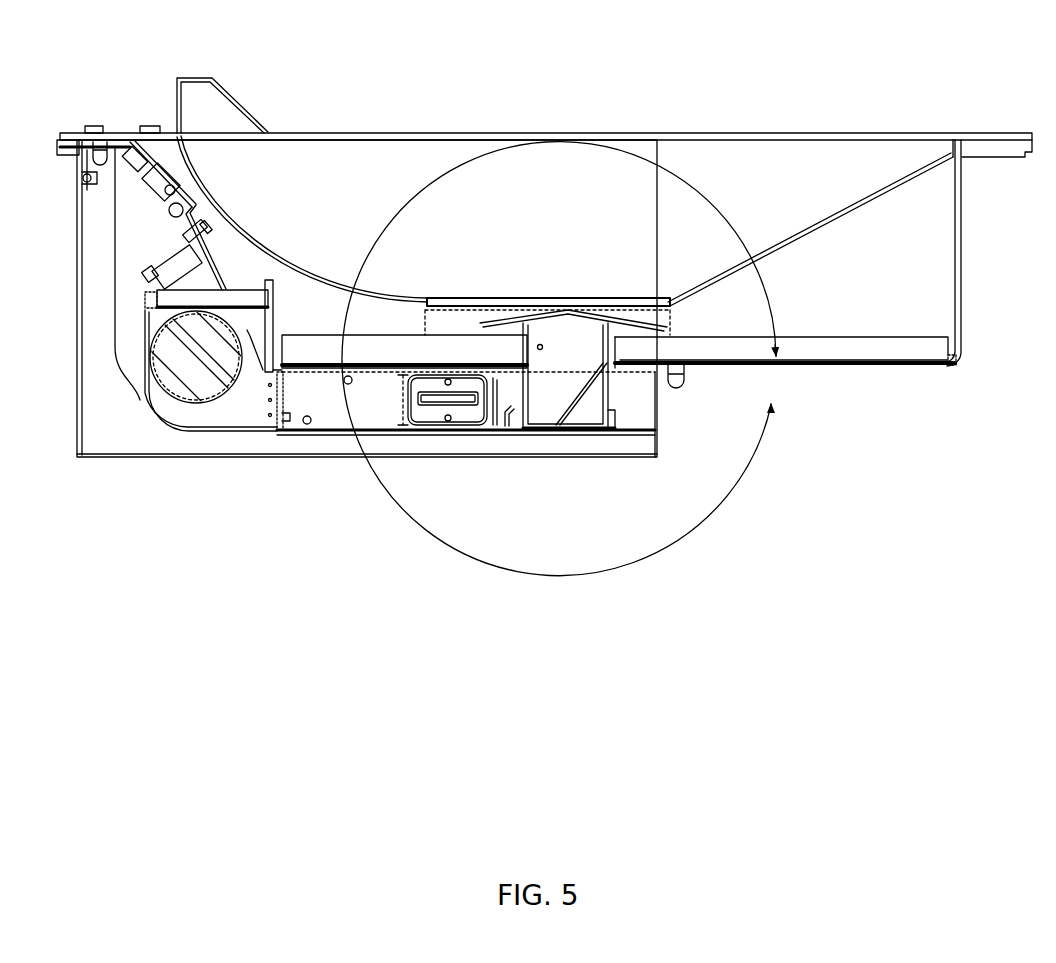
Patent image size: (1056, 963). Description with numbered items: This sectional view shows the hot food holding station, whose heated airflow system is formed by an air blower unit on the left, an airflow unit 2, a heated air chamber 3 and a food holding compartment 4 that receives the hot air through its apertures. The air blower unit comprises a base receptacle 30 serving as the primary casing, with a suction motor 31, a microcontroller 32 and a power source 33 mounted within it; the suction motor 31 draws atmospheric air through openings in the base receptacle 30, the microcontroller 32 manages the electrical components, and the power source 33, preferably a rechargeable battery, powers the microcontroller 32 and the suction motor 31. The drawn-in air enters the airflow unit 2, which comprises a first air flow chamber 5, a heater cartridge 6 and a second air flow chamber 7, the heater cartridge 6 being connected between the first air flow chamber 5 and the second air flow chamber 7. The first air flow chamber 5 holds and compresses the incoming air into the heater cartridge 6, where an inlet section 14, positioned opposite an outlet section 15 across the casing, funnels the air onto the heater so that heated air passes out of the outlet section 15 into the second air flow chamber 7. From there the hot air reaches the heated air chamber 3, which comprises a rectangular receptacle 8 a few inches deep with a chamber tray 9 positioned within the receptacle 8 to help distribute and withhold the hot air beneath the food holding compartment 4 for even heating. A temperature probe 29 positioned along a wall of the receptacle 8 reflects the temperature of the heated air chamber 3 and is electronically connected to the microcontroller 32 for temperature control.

The airflow unit 2 is at (421, 440).
The heated air chamber 3 is at (942, 312).
The food holding compartment 4 is at (860, 177).
The first air flow chamber 5 is at (325, 415).
The heater cartridge 6 is at (460, 413).
The second air flow chamber 7 is at (533, 408).
The receptacle 8 is at (947, 287).
The chamber tray 9 is at (870, 357).
The inlet section 14 is at (398, 392).
The outlet section 15 is at (508, 398).
The temperature probe 29 is at (178, 134).
The base receptacle 30 is at (207, 443).
The suction motor 31 is at (173, 385).
The microcontroller 32 is at (173, 252).
The power source 33 is at (147, 290).